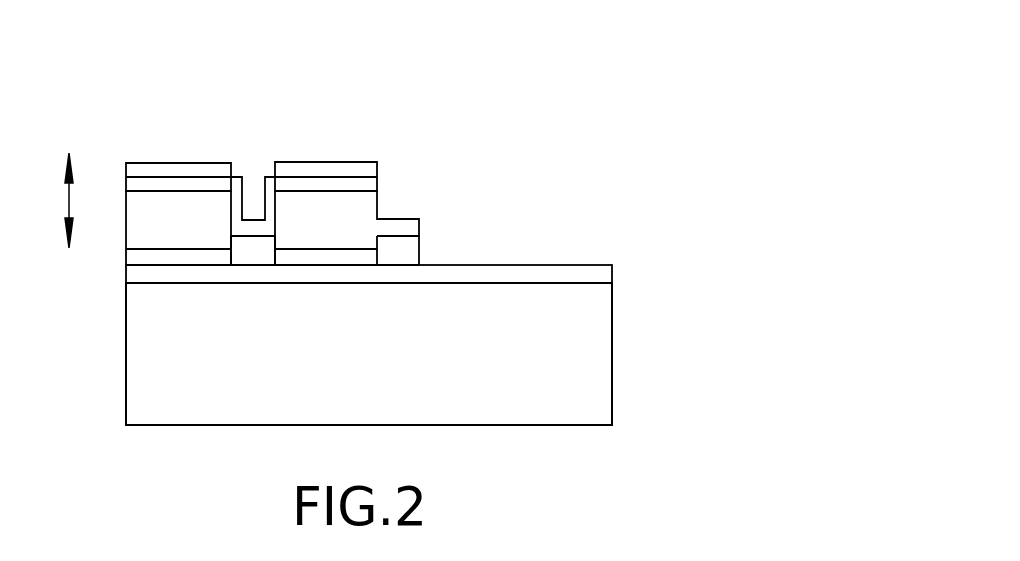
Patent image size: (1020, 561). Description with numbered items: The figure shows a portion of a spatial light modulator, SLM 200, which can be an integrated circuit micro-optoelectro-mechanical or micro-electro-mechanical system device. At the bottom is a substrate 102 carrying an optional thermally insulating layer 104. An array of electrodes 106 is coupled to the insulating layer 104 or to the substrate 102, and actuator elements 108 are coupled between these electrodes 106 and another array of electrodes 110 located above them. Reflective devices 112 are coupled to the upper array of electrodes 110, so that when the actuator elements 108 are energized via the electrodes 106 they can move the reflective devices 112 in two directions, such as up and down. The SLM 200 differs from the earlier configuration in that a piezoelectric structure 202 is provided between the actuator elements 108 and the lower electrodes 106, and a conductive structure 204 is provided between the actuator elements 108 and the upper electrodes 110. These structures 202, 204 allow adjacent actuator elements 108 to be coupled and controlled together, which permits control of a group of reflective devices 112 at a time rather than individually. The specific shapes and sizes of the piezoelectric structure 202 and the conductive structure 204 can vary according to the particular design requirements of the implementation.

The SLM 200 is at (684, 114).
The substrate 102 is at (603, 340).
The thermally insulating layer 104 is at (603, 271).
The electrodes 106 is at (370, 257).
The actuator elements 108 is at (370, 223).
The electrodes 110 is at (373, 187).
The reflective devices 112 is at (370, 170).
The piezoelectric structure 202 is at (248, 252).
The conductive structure 204 is at (248, 226).